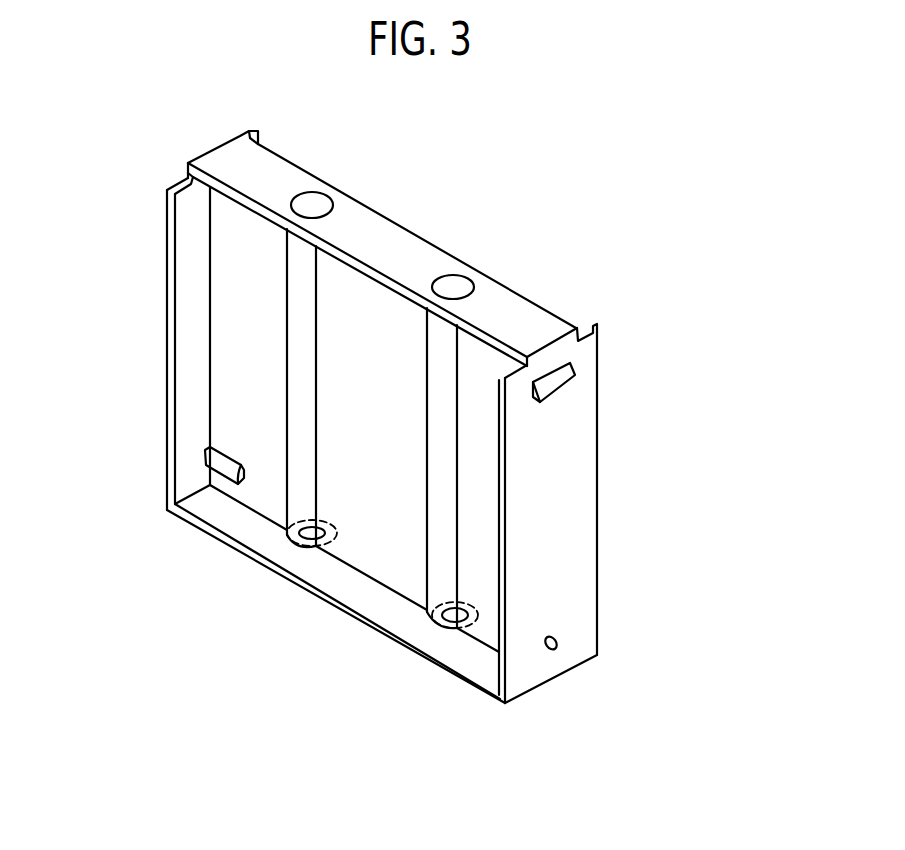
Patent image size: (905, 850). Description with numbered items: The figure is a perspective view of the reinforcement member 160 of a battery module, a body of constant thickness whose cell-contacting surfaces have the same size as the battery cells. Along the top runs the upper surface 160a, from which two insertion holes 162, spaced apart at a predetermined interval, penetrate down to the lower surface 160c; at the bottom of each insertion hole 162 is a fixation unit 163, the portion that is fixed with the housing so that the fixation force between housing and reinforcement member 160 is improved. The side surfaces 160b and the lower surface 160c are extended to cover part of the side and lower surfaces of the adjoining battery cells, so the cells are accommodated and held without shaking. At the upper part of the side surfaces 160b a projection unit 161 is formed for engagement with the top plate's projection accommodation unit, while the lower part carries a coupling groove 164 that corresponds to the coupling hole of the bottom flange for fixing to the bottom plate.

The reinforcement member 160 is at (396, 447).
The upper surface 160a is at (532, 317).
The side surfaces 160b is at (195, 388).
The lower surface 160c is at (473, 658).
The projection unit 161 is at (568, 373).
The insertion holes 162 is at (308, 206).
The fixation unit 163 is at (447, 615).
The coupling groove 164 is at (212, 460).